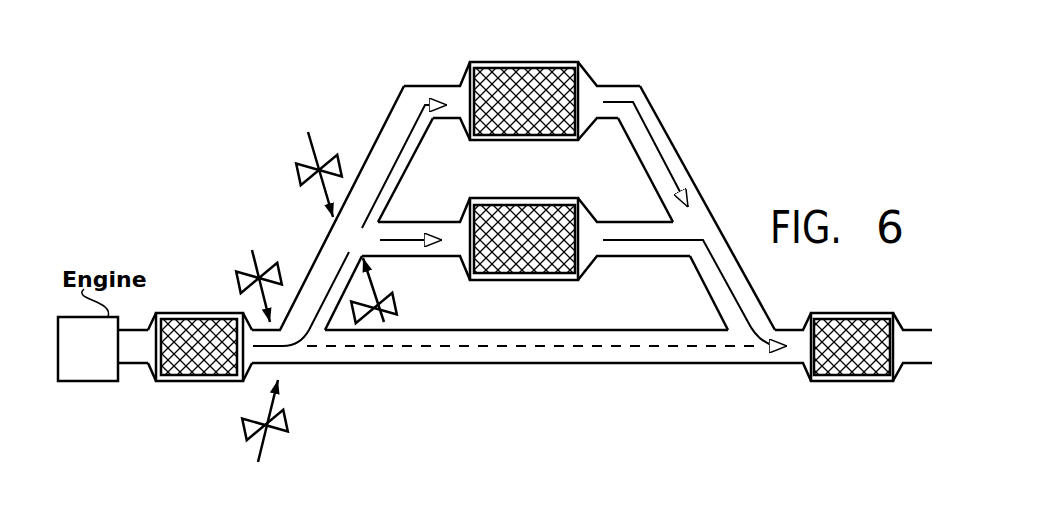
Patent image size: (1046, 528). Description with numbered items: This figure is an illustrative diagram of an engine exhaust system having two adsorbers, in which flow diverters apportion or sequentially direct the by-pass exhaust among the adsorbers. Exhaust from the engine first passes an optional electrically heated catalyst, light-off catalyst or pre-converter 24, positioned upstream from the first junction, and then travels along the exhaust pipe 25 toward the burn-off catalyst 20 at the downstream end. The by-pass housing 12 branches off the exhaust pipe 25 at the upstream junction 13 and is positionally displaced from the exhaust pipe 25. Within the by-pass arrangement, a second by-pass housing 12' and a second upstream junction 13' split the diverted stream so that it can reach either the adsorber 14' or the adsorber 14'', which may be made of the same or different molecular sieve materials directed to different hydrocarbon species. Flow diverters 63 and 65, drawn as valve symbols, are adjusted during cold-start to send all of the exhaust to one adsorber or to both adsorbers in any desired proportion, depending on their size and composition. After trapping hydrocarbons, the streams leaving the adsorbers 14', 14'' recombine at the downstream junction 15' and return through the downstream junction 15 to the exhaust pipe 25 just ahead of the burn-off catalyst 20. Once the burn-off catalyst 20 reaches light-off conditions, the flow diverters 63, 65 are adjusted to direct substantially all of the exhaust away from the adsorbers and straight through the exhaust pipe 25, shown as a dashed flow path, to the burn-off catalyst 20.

The by-pass housing 12 is at (349, 216).
The by-pass housing 12' is at (419, 91).
The upstream junction 13 is at (326, 404).
The upstream junction 13' is at (405, 239).
The adsorber 14' is at (579, 134).
The adsorber 14'' is at (628, 272).
The downstream junction 15 is at (798, 319).
The downstream junction 15' is at (712, 208).
The burn-off catalyst 20 is at (830, 373).
The electrically heated catalyst 24 is at (178, 373).
The exhaust pipe 25 is at (543, 364).
The flow diverter 63 is at (253, 260).
The flow diverter 65 is at (265, 448).